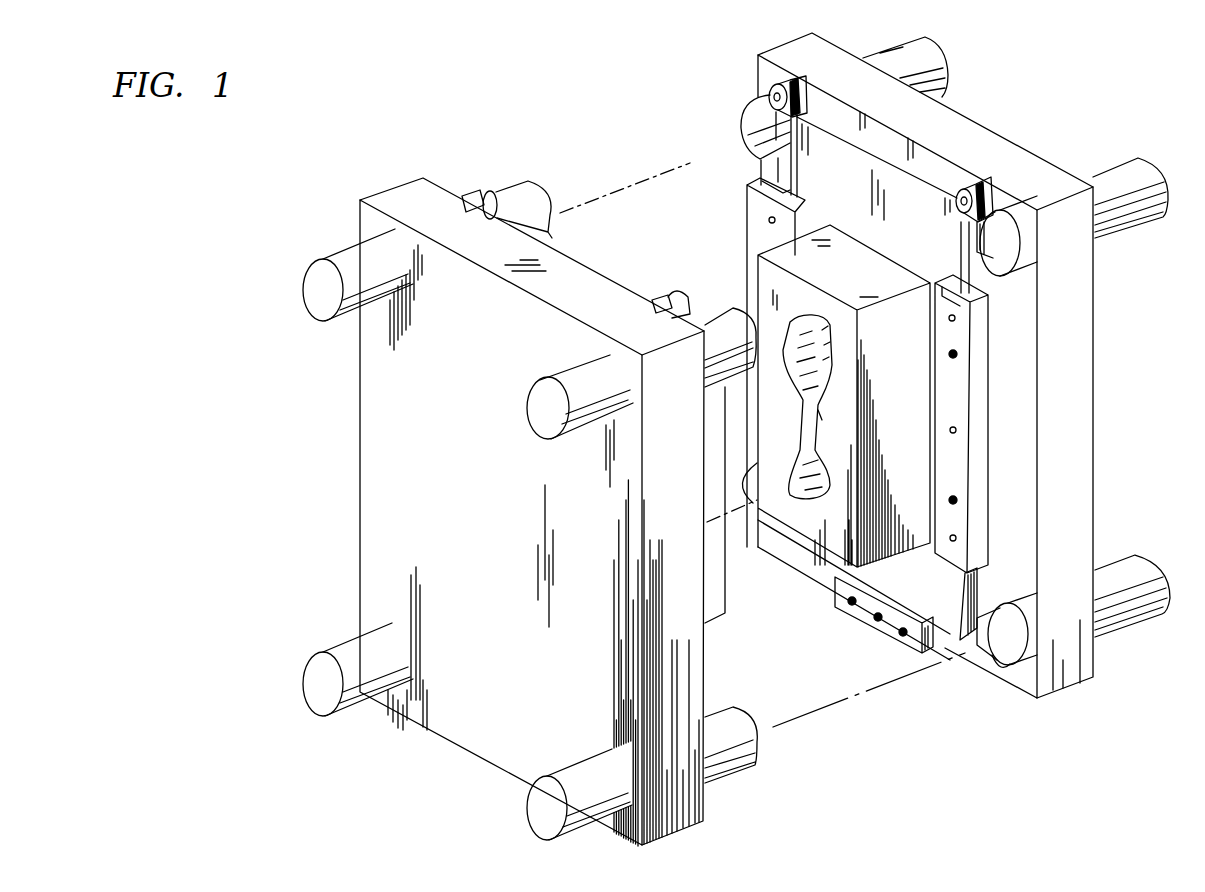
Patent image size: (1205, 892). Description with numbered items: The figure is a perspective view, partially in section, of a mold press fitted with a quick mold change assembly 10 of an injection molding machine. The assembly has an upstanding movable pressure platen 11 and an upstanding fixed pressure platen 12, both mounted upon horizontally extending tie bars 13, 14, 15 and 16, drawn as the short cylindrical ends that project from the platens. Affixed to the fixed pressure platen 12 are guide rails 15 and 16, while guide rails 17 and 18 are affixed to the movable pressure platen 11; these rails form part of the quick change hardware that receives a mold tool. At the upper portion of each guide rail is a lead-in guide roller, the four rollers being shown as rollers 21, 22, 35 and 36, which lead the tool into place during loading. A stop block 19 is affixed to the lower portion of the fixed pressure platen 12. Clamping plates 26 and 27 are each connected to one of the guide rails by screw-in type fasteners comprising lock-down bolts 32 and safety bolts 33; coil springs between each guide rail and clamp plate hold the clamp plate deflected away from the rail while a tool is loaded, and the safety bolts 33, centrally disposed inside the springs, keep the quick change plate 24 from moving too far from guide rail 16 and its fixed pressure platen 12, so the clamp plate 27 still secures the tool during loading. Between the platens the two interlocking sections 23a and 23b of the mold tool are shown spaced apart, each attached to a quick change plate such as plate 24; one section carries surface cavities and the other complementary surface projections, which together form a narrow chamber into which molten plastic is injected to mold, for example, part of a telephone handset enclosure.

The quick mold change assembly 10 is at (582, 108).
The upstanding movable pressure platen 11 is at (406, 192).
The upstanding fixed pressure platen 12 is at (768, 56).
The tie bar 13 is at (336, 256).
The tie bar 14 is at (570, 377).
The guide rail 15 is at (332, 652).
The guide rail 16 is at (568, 762).
The guide rail 17 is at (478, 193).
The guide rail 18 is at (670, 300).
The stop block 19 is at (890, 632).
The lead-in guide roller 21 is at (794, 85).
The lead-in guide roller 22 is at (978, 186).
The interlocking mold tool section 23a is at (868, 260).
The interlocking mold tool section 23b is at (725, 593).
The quick change plate 24 is at (920, 180).
The clamping plate 26 is at (800, 226).
The clamping plate 27 is at (985, 385).
The lock-down bolt 32 is at (768, 222).
The safety bolt 33 is at (958, 354).
The lead-in guide roller 35 is at (500, 175).
The lead-in guide roller 36 is at (690, 300).